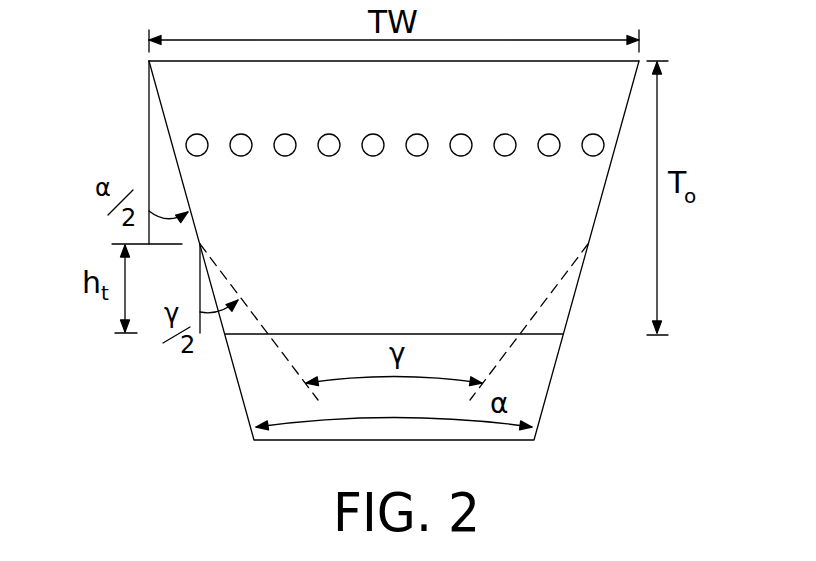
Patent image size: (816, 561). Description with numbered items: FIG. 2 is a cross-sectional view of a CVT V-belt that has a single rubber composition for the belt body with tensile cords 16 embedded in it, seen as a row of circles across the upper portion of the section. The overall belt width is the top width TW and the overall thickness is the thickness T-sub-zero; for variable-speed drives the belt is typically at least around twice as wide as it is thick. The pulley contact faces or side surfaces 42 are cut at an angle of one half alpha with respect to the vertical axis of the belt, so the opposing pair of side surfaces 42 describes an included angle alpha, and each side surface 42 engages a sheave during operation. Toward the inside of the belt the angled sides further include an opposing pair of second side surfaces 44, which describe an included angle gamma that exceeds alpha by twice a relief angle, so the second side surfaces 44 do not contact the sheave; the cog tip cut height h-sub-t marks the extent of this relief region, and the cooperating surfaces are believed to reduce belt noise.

The tensile cords 16 is at (195, 144).
The side surfaces 42 is at (184, 186).
The second side surfaces 44 is at (245, 303).